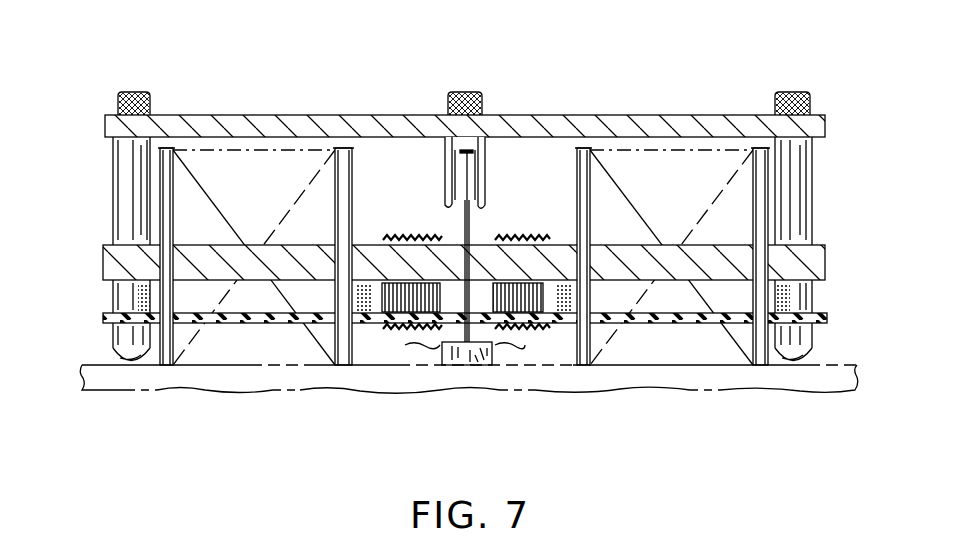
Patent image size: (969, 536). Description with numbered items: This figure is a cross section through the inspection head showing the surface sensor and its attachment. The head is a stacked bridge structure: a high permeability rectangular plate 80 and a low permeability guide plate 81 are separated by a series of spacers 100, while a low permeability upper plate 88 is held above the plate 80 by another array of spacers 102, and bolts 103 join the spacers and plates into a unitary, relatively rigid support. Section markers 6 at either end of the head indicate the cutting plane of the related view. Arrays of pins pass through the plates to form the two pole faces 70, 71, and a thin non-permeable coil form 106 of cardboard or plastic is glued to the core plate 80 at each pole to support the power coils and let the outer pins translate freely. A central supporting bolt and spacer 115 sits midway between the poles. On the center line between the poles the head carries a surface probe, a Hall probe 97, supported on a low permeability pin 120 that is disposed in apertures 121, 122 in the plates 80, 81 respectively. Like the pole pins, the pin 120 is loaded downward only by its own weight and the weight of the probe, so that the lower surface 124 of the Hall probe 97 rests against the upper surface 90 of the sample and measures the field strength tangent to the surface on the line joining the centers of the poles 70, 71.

The section line 6- 6 is at (61, 176).
The pole face 70 is at (283, 161).
The pole face 71 is at (660, 164).
The high permeability rectangular plate 80 is at (108, 245).
The low permeability guide plate 81 is at (108, 315).
The low permeability upper plate 88 is at (580, 126).
The upper surface of the sample 90 is at (298, 356).
The Hall probe 97 is at (445, 365).
The spacers 100 is at (131, 300).
The spacers 102 is at (808, 214).
The bolts 103 is at (791, 92).
The coil form 106 is at (775, 300).
The central supporting bolts and spacers 115 is at (480, 92).
The pin 120 is at (472, 162).
The aperture 121 is at (471, 242).
The aperture 122 is at (455, 258).
The lower surface of the Hall probe 124 is at (480, 365).